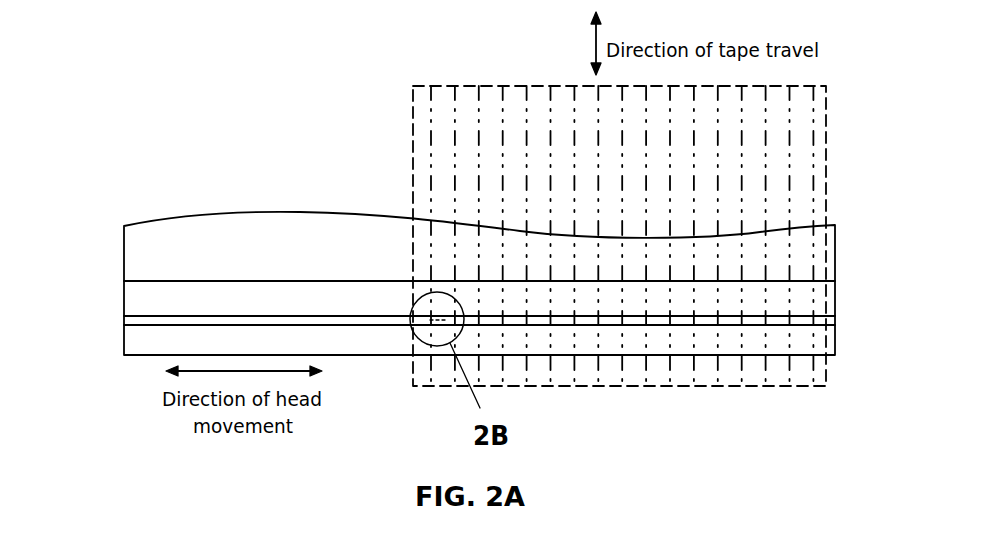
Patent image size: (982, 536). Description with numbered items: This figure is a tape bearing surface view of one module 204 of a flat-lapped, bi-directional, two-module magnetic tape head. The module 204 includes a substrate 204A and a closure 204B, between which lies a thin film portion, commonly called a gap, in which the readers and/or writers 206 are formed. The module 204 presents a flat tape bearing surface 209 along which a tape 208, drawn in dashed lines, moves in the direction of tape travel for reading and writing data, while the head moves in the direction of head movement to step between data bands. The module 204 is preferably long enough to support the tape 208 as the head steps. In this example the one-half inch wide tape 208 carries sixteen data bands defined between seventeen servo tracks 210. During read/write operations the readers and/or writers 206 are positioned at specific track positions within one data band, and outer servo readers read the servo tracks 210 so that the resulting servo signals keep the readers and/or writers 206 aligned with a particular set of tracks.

The module 204 is at (166, 200).
The substrate 204A is at (260, 212).
The closure 204B is at (124, 341).
The readers and/or writers 206 is at (410, 318).
The tape 208 is at (413, 90).
The tape bearing surface 209 is at (318, 301).
The servo tracks 210 is at (523, 171).